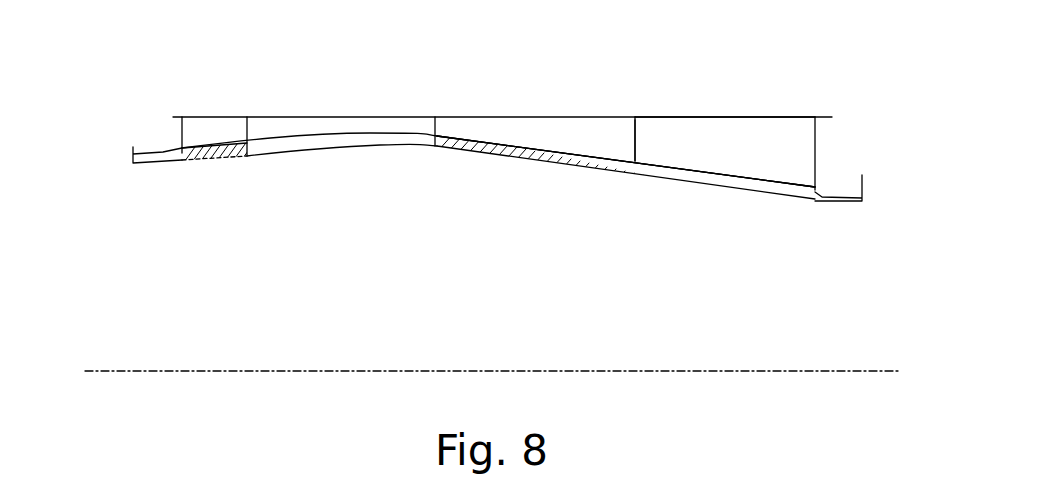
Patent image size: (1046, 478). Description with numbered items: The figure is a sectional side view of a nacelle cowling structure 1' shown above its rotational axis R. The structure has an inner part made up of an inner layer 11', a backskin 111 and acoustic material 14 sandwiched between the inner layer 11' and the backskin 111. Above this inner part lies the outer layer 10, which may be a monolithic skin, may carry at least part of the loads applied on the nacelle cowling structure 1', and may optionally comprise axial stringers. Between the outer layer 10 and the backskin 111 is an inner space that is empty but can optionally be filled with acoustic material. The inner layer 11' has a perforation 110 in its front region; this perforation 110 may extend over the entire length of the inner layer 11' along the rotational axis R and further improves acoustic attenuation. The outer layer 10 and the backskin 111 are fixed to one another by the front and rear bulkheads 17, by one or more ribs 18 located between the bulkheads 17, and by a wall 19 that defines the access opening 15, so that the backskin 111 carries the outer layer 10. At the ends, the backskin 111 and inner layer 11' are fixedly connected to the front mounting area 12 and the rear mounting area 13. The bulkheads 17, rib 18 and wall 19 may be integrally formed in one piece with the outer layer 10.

The nacelle cowling structure 1' is at (297, 85).
The outer layer 10 is at (738, 117).
The inner layer 11' is at (630, 185).
The front mounting area 12 is at (132, 155).
The rear mounting area 13 is at (866, 193).
The acoustic material 14 is at (557, 164).
The access opening 15 is at (345, 118).
The front and rear bulkheads 17 is at (181, 136).
The rib 18 is at (637, 134).
The wall 19 is at (247, 126).
The perforation 110 is at (213, 164).
The backskin 111 is at (543, 148).
The rotational axis R is at (170, 370).